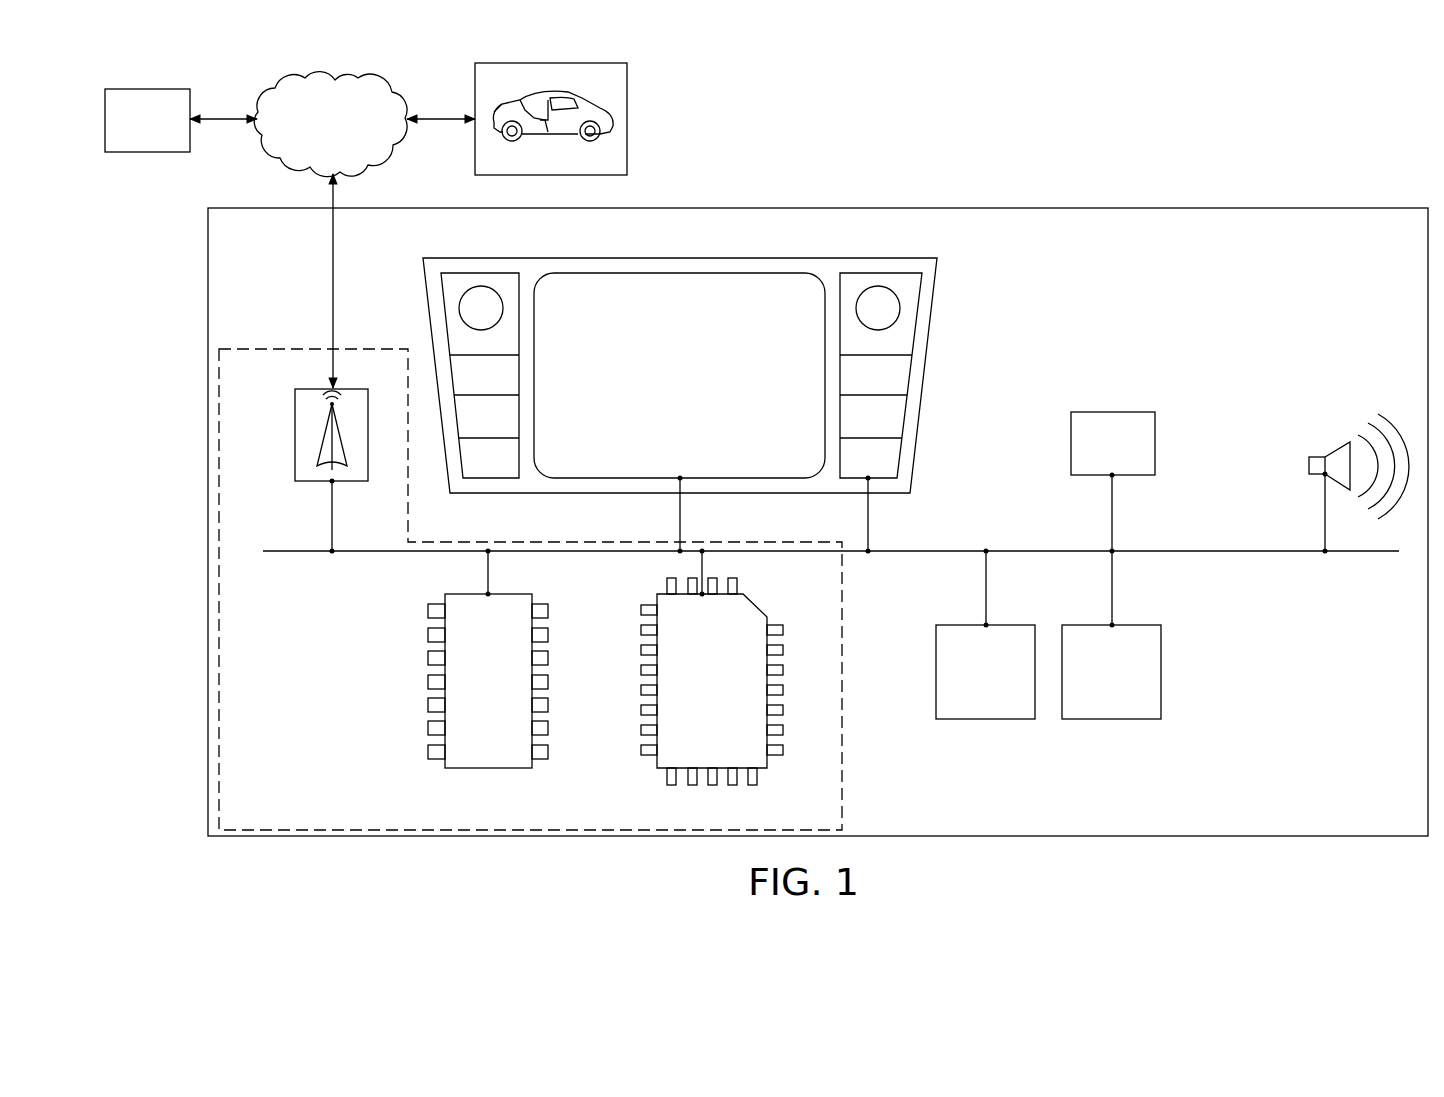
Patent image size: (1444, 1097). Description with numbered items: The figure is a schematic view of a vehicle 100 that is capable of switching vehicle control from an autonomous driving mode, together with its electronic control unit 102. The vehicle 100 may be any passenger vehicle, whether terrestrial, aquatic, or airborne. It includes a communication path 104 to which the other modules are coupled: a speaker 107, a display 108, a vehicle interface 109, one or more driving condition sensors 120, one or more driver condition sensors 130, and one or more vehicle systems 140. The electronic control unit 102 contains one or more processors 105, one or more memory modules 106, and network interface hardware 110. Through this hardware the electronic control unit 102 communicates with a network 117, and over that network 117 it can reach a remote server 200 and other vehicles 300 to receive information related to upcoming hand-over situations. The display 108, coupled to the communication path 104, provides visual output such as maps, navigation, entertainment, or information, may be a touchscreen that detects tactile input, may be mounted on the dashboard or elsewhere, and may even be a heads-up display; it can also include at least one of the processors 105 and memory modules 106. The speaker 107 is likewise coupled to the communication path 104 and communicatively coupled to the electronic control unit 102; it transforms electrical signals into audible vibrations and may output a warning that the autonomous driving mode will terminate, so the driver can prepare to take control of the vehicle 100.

The vehicle 100 is at (1300, 204).
The electronic control unit 102 is at (219, 638).
The communication path 104 is at (390, 553).
The processor 105 is at (659, 769).
The memory module 106 is at (486, 768).
The speaker 107 is at (1320, 457).
The display 108 is at (718, 291).
The vehicle interface 109 is at (481, 286).
The network interface hardware 110 is at (295, 397).
The network 117 is at (351, 78).
The driving condition sensor 120 is at (985, 720).
The driver condition sensor 130 is at (1114, 720).
The vehicle systems 140 is at (1106, 412).
The remote server 200 is at (146, 89).
The other vehicle 300 is at (628, 118).